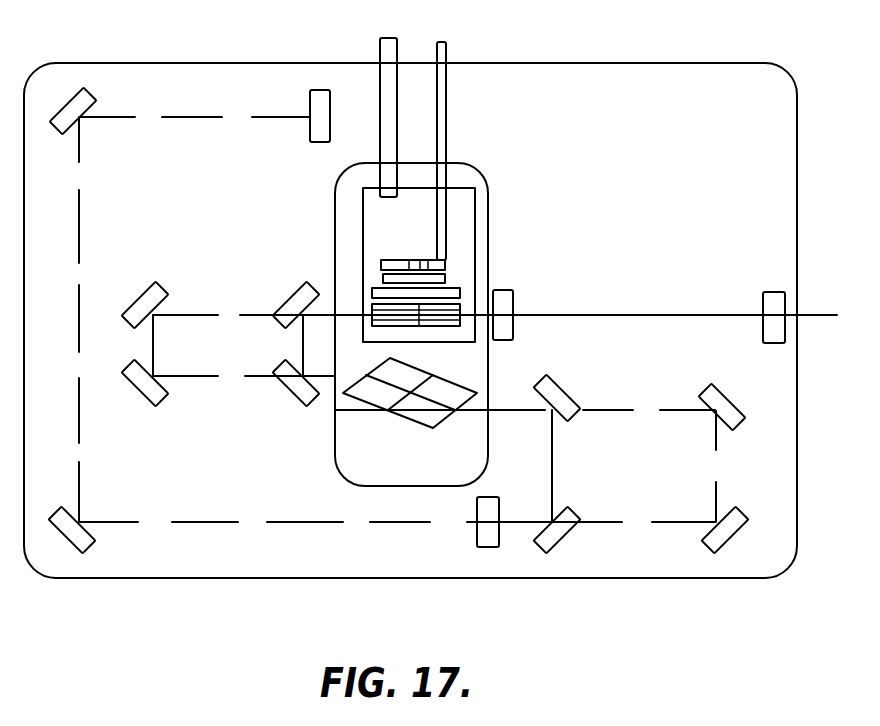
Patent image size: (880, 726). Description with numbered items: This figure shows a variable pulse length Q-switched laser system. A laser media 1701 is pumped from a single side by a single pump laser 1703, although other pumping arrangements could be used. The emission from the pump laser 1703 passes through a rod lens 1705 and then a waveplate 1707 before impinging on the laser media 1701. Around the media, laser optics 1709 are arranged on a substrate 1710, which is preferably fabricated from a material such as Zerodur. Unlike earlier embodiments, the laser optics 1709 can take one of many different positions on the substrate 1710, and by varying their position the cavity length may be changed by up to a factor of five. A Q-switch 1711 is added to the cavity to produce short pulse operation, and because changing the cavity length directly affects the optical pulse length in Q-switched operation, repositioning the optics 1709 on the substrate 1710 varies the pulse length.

The laser media 1701 is at (460, 322).
The pump laser 1703 is at (381, 263).
The rod lens 1705 is at (446, 277).
The waveplate 1707 is at (461, 293).
The laser optics 1709 is at (319, 88).
The substrate 1710 is at (782, 119).
The Q-switch 1711 is at (423, 428).